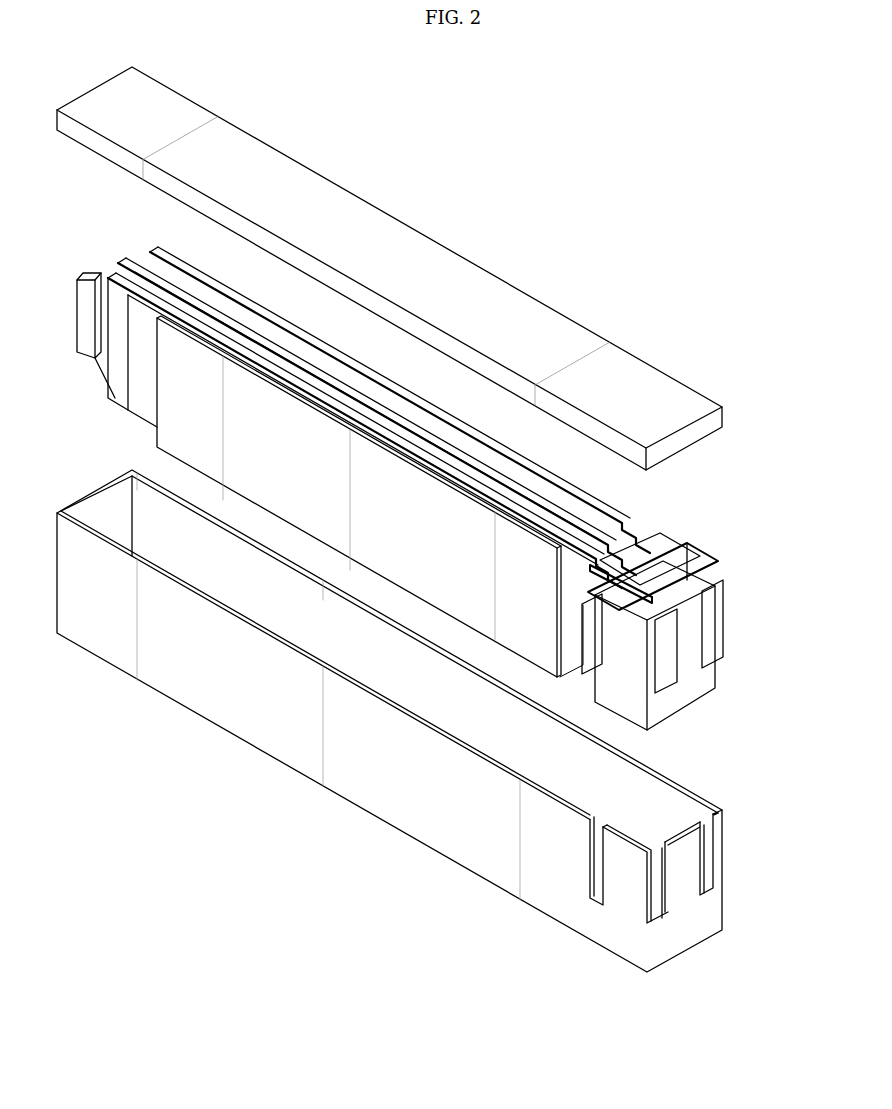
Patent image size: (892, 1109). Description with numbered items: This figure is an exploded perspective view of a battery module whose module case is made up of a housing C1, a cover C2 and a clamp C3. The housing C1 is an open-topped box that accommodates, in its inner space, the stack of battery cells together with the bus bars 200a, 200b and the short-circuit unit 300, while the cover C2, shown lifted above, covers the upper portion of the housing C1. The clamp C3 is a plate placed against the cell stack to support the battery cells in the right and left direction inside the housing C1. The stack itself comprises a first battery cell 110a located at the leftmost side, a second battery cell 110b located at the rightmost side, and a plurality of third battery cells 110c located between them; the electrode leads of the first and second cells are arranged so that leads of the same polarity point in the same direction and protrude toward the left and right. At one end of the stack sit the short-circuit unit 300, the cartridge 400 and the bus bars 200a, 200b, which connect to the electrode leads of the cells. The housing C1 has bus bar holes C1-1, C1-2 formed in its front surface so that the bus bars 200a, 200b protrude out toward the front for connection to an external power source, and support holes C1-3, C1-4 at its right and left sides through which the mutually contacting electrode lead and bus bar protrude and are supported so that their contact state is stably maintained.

The cover C2 is at (430, 257).
The housing C1 is at (283, 742).
The clamp C3 is at (170, 442).
The first battery cell 110a is at (122, 288).
The second battery cell 110b is at (168, 255).
The third battery cell 110c is at (123, 262).
The short-circuit unit 300 is at (650, 553).
The cartridge 400 is at (690, 715).
The bus bar 200a is at (684, 686).
The bus bar 200b is at (731, 644).
The bus bar hole C1-1 is at (660, 903).
The bus bar hole C1-2 is at (707, 860).
The support hole C1-3 is at (597, 885).
The support hole C1-4 is at (672, 813).